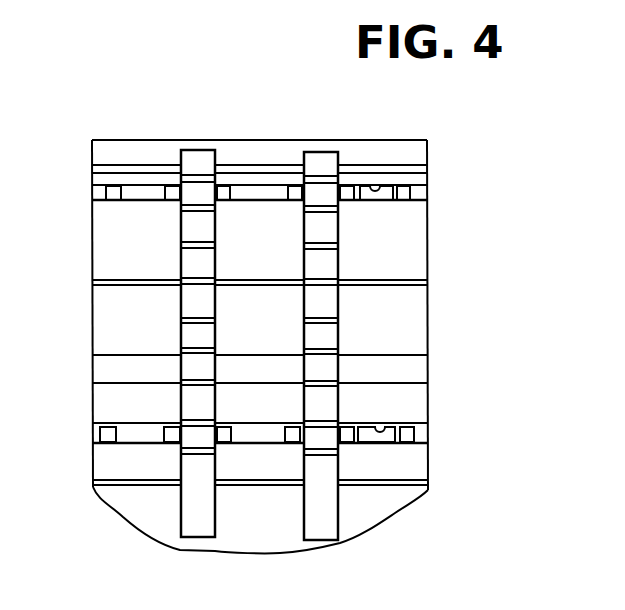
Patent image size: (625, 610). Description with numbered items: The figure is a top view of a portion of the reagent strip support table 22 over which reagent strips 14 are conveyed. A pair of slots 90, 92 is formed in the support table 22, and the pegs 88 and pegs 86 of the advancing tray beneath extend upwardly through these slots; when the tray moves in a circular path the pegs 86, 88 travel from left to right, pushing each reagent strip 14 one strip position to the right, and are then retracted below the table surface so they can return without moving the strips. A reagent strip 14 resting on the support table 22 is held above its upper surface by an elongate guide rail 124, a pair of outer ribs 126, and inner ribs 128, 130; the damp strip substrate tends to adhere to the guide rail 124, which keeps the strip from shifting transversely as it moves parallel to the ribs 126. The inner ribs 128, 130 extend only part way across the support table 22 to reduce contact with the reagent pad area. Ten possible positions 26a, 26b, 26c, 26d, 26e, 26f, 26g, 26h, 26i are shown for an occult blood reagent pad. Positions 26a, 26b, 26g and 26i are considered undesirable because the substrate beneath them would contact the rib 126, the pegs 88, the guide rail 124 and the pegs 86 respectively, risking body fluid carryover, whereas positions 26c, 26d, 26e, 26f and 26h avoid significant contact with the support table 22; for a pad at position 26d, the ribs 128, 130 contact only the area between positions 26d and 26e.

The reagent strip support table 22 is at (107, 139).
The reagent strip 14 is at (180, 528).
The occult blood reagent pad position 26a is at (198, 162).
The occult blood reagent pad position 26b is at (327, 193).
The occult blood reagent pad position 26c is at (200, 228).
The occult blood reagent pad position 26d is at (193, 263).
The occult blood reagent pad position 26e is at (200, 303).
The occult blood reagent pad position 26f is at (200, 340).
The occult blood reagent pad position 26g is at (190, 370).
The occult blood reagent pad position 26h is at (203, 413).
The occult blood reagent pad position 26i is at (315, 440).
The pegs 86 is at (417, 433).
The pegs 88 is at (243, 185).
The slot 90 is at (382, 183).
The slot 92 is at (383, 437).
The guide rail 124 is at (410, 370).
The outer ribs 126 is at (278, 163).
The inner rib 128 is at (142, 287).
The inner rib 130 is at (390, 287).